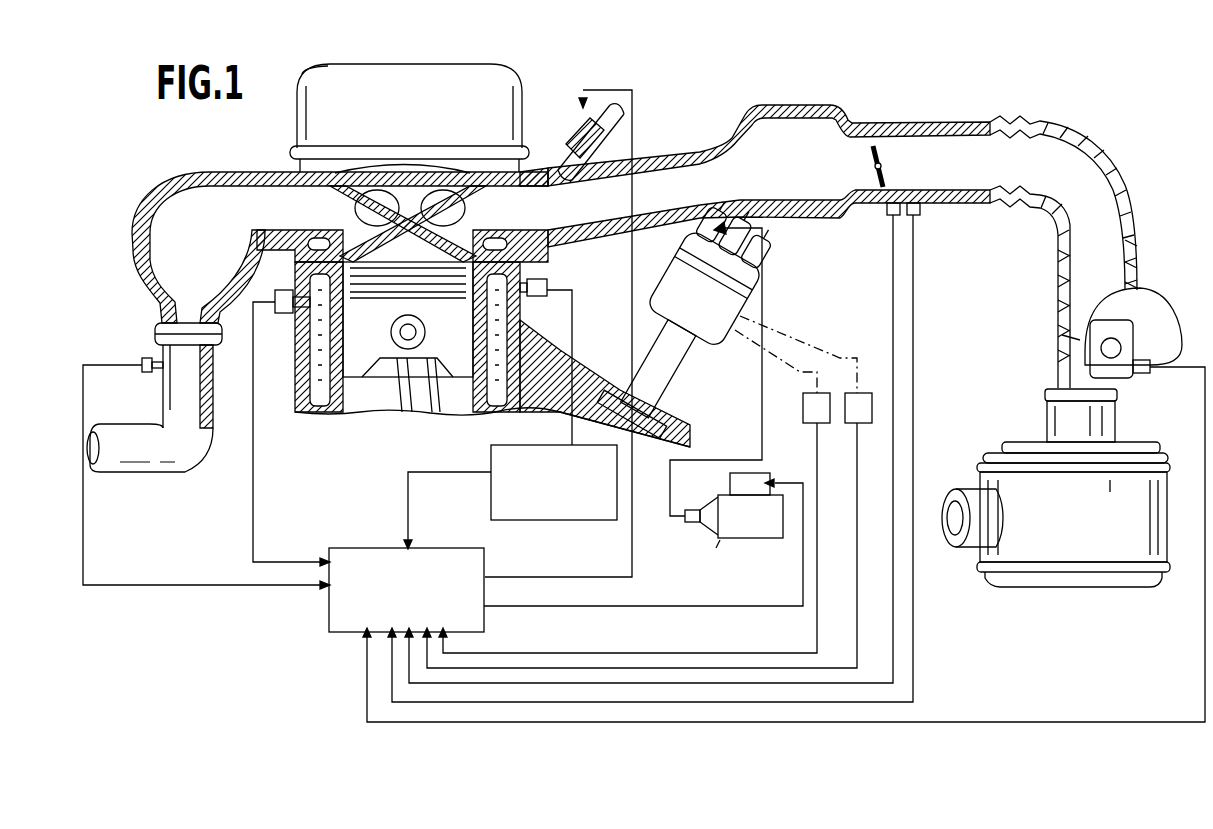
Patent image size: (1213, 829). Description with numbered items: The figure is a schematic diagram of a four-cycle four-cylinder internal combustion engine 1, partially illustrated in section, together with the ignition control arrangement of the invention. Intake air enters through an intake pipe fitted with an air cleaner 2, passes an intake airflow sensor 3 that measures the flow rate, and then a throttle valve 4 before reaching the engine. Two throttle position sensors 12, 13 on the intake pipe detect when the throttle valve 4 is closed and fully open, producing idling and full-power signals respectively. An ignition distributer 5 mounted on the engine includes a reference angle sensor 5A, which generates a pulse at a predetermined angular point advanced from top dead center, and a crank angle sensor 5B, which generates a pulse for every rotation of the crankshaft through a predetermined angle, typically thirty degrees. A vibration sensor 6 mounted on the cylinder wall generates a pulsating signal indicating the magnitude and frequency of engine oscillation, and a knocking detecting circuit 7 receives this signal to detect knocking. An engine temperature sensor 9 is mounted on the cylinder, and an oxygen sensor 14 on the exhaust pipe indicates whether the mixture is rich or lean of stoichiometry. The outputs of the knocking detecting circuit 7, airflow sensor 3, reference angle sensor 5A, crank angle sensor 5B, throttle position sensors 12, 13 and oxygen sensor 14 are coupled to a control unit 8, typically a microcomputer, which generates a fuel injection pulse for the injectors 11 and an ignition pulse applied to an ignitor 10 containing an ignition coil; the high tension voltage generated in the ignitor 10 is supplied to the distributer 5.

The internal combustion engine 1 is at (513, 92).
The air cleaner 2 is at (1155, 515).
The intake airflow sensor 3 is at (1165, 320).
The throttle valve 4 is at (880, 150).
The ignition distributer 5 is at (745, 272).
The reference angle sensor 5A is at (803, 408).
The crank angle sensor 5B is at (860, 393).
The vibration sensor 6 is at (560, 285).
The knocking detecting circuit 7 is at (566, 522).
The control unit 8 is at (425, 548).
The engine temperature sensor 9 is at (276, 316).
The ignitor 10 is at (762, 474).
The injectors 11 is at (568, 140).
The throttle position sensor 12 is at (888, 215).
The throttle position sensor 13 is at (920, 215).
The oxygen sensor 14 is at (142, 358).